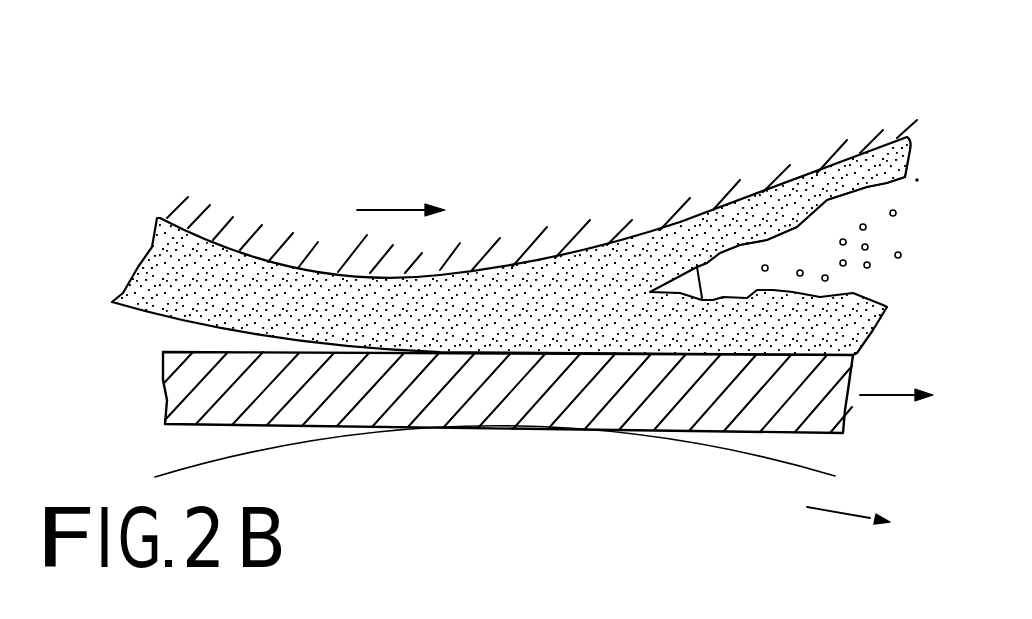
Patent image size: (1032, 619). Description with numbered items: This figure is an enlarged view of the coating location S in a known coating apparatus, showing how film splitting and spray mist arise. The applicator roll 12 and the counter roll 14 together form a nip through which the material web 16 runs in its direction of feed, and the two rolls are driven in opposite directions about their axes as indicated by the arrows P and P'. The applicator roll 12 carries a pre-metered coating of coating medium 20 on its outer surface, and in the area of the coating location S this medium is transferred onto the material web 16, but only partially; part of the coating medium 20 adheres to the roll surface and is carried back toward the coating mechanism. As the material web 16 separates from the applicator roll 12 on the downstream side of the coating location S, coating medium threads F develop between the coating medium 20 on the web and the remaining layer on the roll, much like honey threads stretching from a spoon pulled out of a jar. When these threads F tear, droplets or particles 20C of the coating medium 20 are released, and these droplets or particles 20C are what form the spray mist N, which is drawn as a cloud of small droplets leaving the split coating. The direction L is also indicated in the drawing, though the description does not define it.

The applicator roll 12 is at (615, 203).
The counter roll 14 is at (338, 478).
The material web 16 is at (608, 408).
The coating medium 20 is at (265, 287).
The droplets or particles 20C is at (813, 253).
The arrow P is at (416, 171).
The coating medium threads F is at (712, 303).
The spray mist N is at (873, 214).
The lateral direction L is at (883, 392).
The coating location S is at (462, 478).
The arrow P' is at (833, 552).